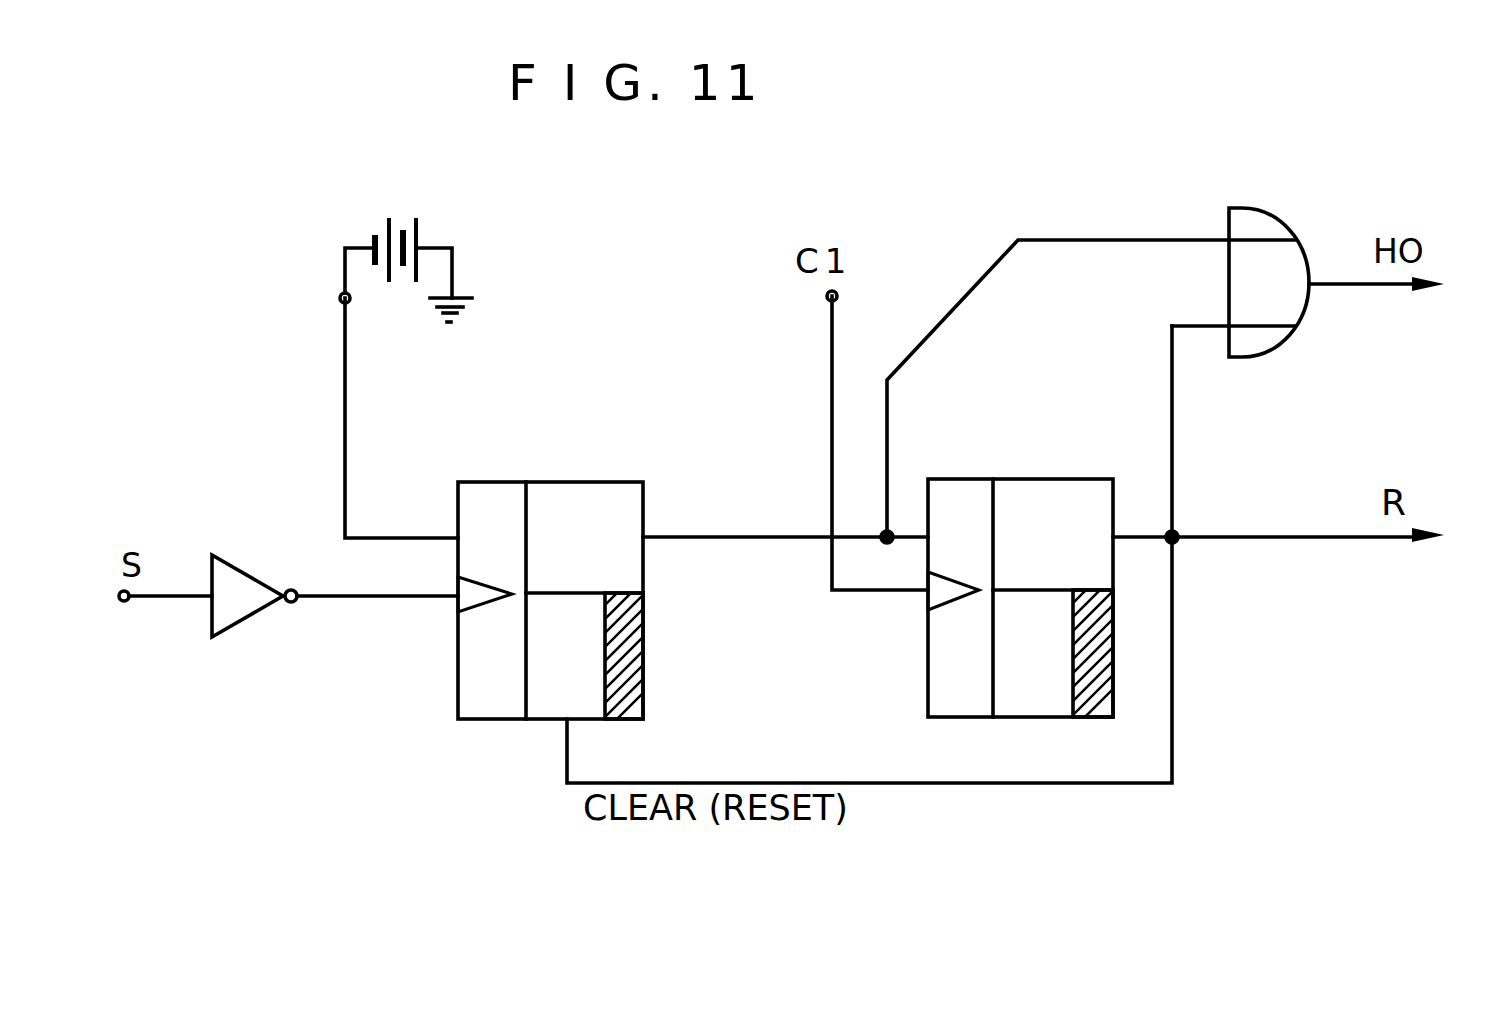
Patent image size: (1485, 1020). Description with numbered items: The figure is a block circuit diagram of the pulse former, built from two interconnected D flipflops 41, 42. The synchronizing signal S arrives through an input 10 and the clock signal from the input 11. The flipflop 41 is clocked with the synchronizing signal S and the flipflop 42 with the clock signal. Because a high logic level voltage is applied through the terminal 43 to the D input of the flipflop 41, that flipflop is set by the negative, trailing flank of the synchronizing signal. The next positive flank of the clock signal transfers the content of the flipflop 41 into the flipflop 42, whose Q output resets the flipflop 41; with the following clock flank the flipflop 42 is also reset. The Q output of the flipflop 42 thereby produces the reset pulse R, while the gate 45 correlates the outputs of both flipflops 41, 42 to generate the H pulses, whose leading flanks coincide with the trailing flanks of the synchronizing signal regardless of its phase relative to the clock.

The input 10 is at (124, 601).
The input 11 is at (827, 297).
The flipflop 41 is at (578, 482).
The flipflop 42 is at (977, 479).
The terminal 43 is at (340, 298).
The OR gate 45 is at (1257, 357).